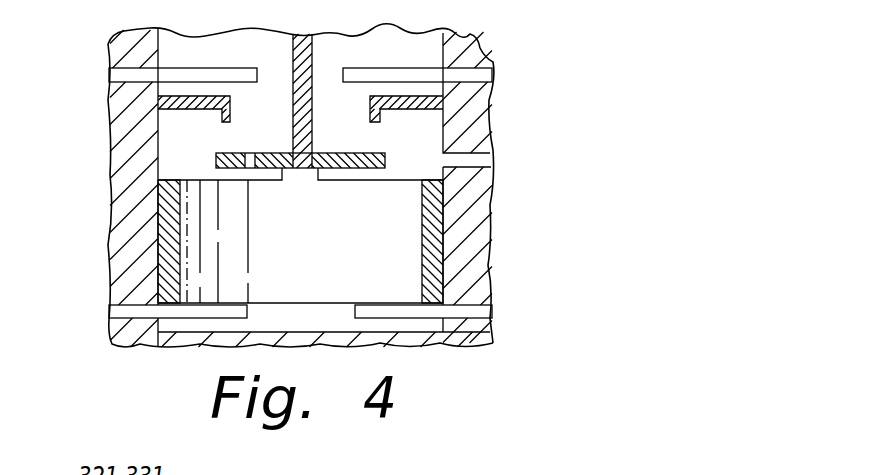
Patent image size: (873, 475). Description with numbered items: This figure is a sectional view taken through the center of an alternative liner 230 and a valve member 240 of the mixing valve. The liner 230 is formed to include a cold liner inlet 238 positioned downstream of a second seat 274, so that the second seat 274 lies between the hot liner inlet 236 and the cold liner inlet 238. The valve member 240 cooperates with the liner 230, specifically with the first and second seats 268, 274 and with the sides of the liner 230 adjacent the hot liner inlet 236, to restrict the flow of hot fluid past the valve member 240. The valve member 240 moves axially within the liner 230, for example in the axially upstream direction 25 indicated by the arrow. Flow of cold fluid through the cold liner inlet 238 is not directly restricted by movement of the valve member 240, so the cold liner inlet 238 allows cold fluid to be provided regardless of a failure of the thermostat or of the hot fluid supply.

The axially upstream direction 25 is at (80, 230).
The liner 230 is at (490, 208).
The hot liner inlet 236 is at (483, 313).
The cold liner inlet 238 is at (470, 72).
The valve member 240 is at (441, 241).
The first seat 268 is at (455, 318).
The second seat 274 is at (414, 109).